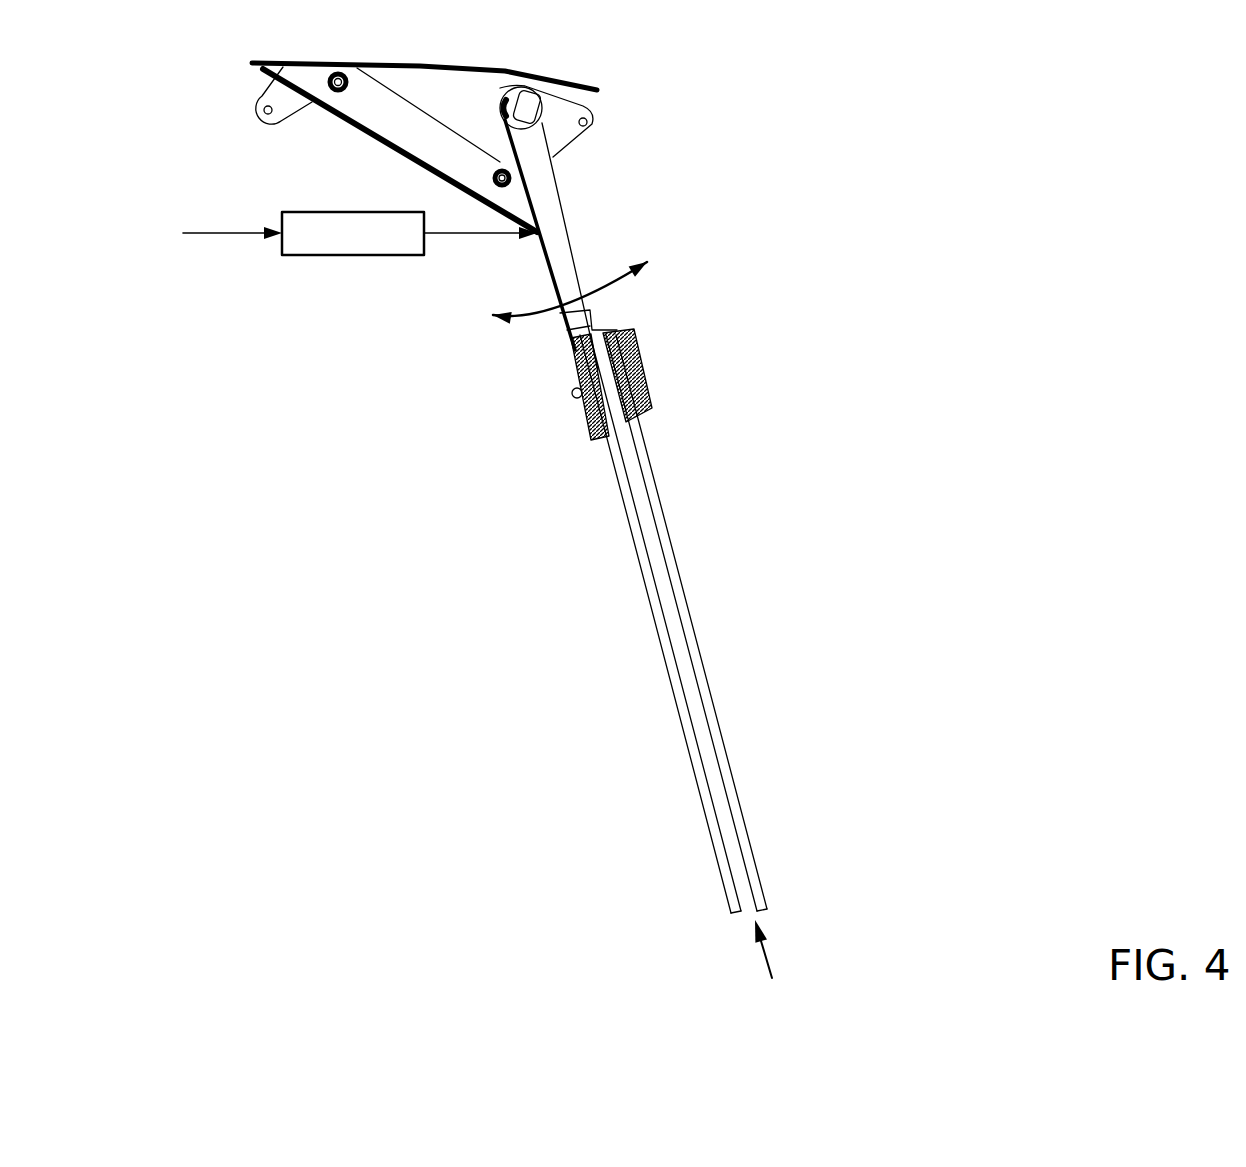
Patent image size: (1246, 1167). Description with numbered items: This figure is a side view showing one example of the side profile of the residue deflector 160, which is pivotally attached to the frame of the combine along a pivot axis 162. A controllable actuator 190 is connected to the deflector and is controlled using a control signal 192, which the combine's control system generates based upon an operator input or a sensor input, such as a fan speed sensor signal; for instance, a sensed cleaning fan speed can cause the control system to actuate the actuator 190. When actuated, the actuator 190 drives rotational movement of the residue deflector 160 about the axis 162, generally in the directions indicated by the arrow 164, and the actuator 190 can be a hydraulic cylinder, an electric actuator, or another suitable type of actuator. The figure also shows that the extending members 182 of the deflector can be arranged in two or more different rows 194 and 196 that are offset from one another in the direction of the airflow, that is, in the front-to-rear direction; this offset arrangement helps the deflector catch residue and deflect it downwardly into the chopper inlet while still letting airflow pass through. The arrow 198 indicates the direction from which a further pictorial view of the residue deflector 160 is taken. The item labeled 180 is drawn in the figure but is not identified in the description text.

The residue deflector 160 is at (770, 125).
The pivot axis 162 is at (503, 178).
The arrow 164 is at (548, 315).
The rotation direction 180 is at (580, 267).
The extending members 182 is at (709, 624).
The controllable actuator 190 is at (337, 255).
The control signal 192 is at (210, 233).
The row 194 is at (722, 830).
The row 196 is at (738, 805).
The arrow 198 is at (768, 960).